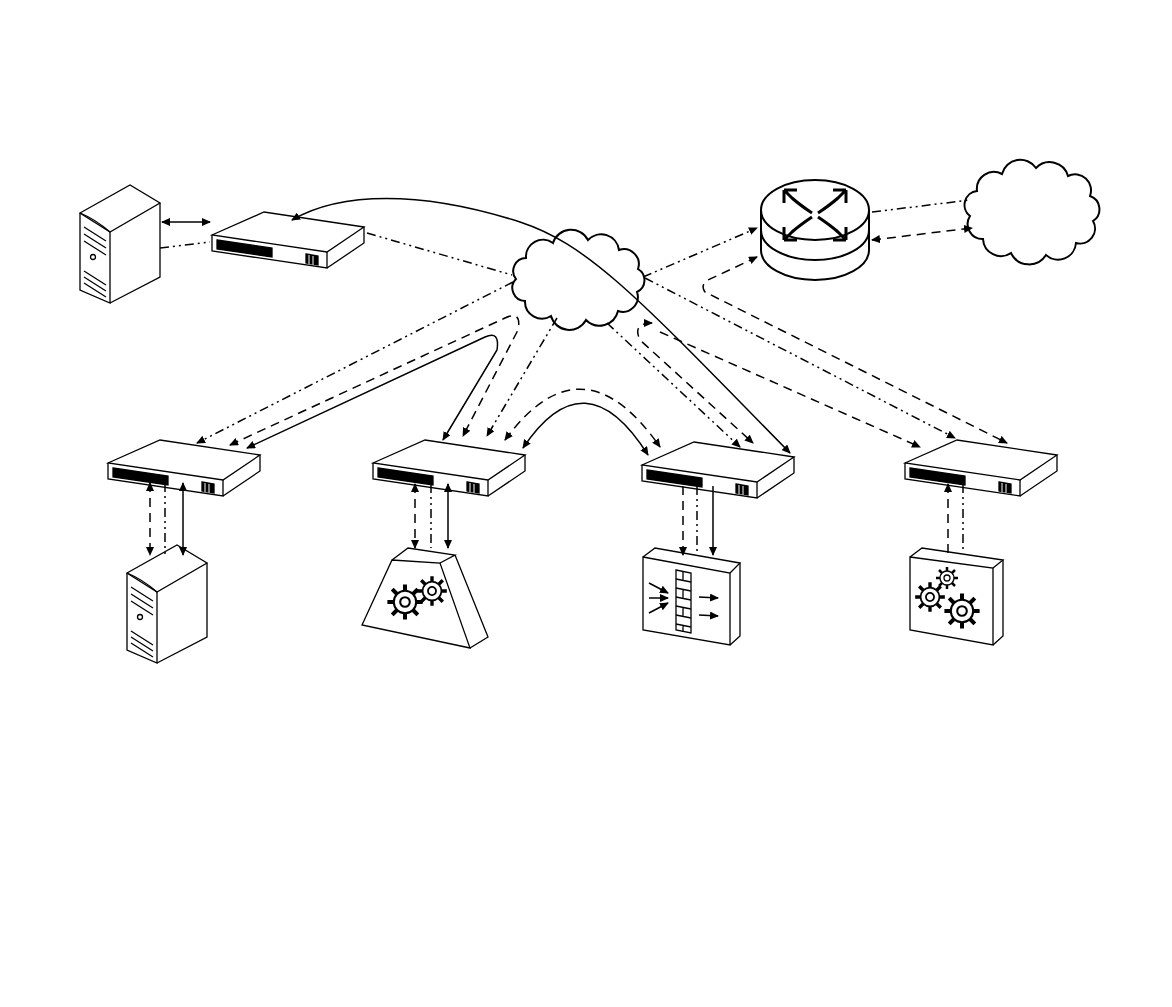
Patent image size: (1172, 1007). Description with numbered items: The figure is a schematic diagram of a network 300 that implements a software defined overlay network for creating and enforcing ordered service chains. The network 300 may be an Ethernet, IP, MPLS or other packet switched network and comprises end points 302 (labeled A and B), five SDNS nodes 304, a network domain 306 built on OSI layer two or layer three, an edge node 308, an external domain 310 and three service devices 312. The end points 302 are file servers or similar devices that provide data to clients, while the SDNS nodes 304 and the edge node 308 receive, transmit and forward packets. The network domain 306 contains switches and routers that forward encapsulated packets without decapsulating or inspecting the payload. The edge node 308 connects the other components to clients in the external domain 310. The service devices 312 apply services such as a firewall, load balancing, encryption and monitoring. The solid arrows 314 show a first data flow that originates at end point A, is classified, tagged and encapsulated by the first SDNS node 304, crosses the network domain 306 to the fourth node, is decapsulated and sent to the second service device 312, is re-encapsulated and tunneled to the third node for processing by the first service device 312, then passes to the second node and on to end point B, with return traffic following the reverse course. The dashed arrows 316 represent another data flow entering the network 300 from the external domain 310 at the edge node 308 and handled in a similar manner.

The network 300 is at (160, 128).
The end points 302 is at (162, 264).
The SDNS nodes 304 is at (340, 255).
The network domain 306 is at (612, 247).
The edge node 308 is at (765, 198).
The external domain 310 is at (1097, 210).
The service devices 312 is at (477, 590).
The solid arrows 314 is at (468, 206).
The dashed arrows 316 is at (848, 366).